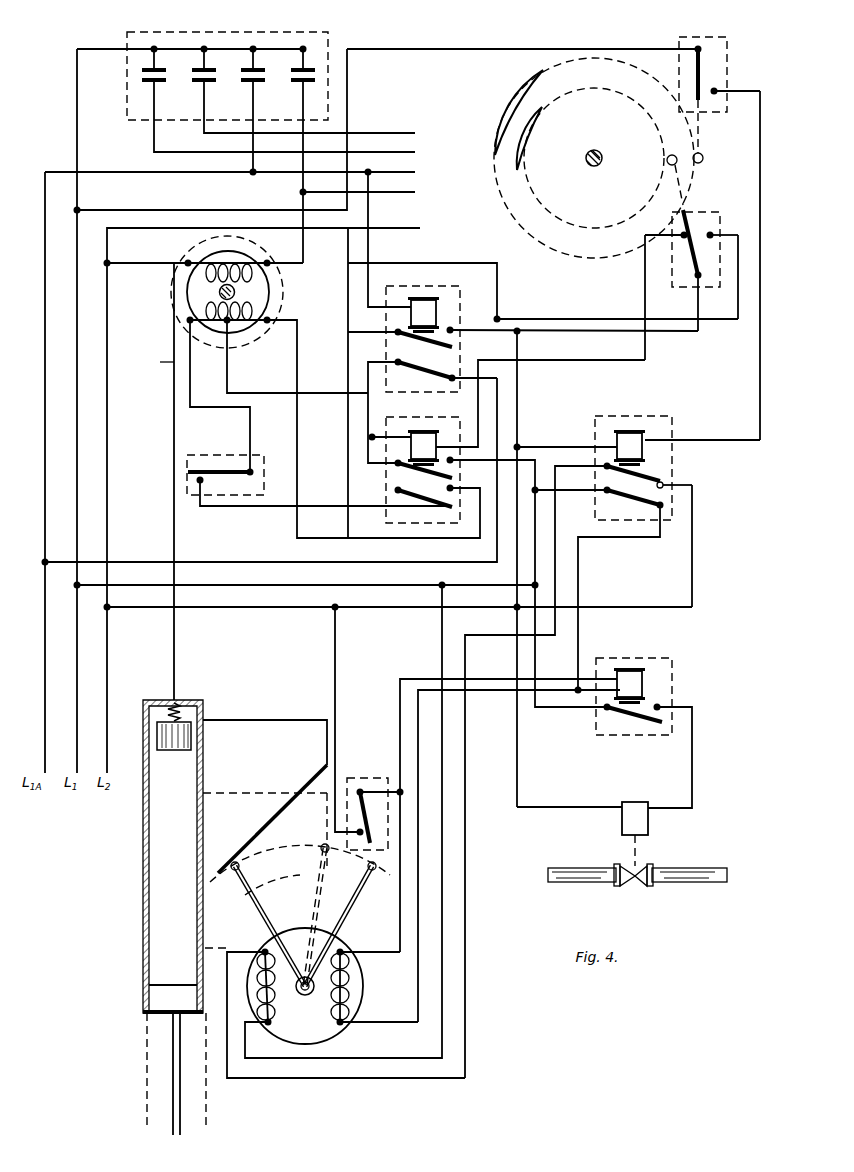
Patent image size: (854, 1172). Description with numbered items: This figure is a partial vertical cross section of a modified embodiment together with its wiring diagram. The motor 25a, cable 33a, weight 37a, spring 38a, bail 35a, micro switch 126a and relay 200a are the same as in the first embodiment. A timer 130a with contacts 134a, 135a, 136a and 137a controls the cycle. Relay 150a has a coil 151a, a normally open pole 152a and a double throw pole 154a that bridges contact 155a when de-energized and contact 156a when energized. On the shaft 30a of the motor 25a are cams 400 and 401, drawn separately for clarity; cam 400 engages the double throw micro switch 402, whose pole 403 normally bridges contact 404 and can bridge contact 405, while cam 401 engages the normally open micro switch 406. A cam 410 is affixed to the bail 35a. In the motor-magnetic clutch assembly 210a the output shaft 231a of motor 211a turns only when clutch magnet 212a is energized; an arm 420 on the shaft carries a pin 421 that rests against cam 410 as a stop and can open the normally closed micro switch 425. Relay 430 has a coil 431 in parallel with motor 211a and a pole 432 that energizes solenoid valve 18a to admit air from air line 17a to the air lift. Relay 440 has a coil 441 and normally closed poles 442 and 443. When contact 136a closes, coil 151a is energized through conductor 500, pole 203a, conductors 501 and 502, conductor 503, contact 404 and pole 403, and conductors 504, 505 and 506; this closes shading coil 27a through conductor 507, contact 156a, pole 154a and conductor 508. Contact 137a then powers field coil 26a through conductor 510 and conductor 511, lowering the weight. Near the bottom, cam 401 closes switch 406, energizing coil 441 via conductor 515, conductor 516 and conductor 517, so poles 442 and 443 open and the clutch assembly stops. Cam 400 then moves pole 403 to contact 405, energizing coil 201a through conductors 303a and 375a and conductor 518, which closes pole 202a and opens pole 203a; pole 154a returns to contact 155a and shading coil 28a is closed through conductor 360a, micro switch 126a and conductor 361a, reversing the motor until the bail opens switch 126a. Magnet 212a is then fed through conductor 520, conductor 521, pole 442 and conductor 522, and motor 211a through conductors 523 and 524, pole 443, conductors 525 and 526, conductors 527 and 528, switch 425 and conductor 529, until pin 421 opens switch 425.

The timer 130a is at (212, 32).
The contact 134a is at (264, 100).
The contact 135a is at (290, 91).
The contact 136a is at (237, 110).
The contact 137a is at (337, 156).
The conductor 303a is at (204, 173).
The conductor 515 is at (532, 48).
The micro switch 406 is at (734, 73).
The conductor 516 is at (760, 180).
The shaft 30a is at (600, 151).
The cam 401 is at (496, 118).
The cam 400 is at (520, 152).
The micro switch 402 is at (700, 237).
The pole 403 is at (690, 260).
The contact 404 is at (682, 234).
The contact 405 is at (712, 235).
The motor 25a is at (200, 249).
The field coil 26a is at (204, 276).
The shading coil 28a is at (188, 302).
The shading coil 27a is at (272, 299).
The conductor 511 is at (157, 262).
The conductor 510 is at (308, 262).
The conductor 375a is at (370, 262).
The cable 33a is at (174, 538).
The conductor 361a is at (149, 361).
The conductor 508 is at (240, 398).
The conductor 518 is at (610, 316).
The relay 200a is at (398, 339).
The coil 201a is at (416, 297).
The pole 202a is at (454, 332).
The conductor 504 is at (662, 332).
The pole 203a is at (442, 378).
The conductor 501 is at (364, 388).
The conductor 502 is at (376, 432).
The conductor 503 is at (614, 358).
The conductor 505 is at (518, 403).
The relay 150a is at (398, 475).
The coil 151a is at (420, 429).
The pole 152a is at (424, 473).
The contact 156a is at (454, 464).
The pole 154a is at (418, 498).
The contact 155a is at (444, 510).
The conductor 507 is at (297, 433).
The conductor 524 is at (535, 496).
The micro switch 126a is at (234, 450).
The conductor 360a is at (276, 508).
The conductor 500 is at (274, 562).
The conductor 520 is at (274, 586).
The conductor 506 is at (276, 608).
The conductor 522 is at (692, 584).
The relay 440 is at (633, 456).
The coil 441 is at (650, 446).
The conductor 517 is at (578, 447).
The pole 442 is at (654, 478).
The pole 443 is at (642, 506).
The conductor 523 is at (538, 538).
The conductor 525 is at (646, 537).
The relay 430 is at (634, 683).
The coil 431 is at (646, 692).
The pole 432 is at (640, 720).
The conductor 527 is at (426, 680).
The conductor 526 is at (506, 692).
The conductor 529 is at (334, 694).
The micro switch 425 is at (354, 776).
The conductor 528 is at (398, 790).
The bail 35a is at (180, 701).
The spring 38a is at (184, 714).
The weight 37a is at (180, 750).
The cam 410 is at (268, 830).
The arm 420 is at (352, 909).
The pin 421 is at (326, 868).
The motor-magnetic clutch assembly 210a is at (316, 990).
The output shaft 231a is at (300, 996).
The clutch magnet 212a is at (248, 950).
The motor 211a is at (353, 1002).
The conductor 521 is at (398, 1078).
The solenoid valve 18a is at (648, 822).
The air line 17a is at (582, 888).